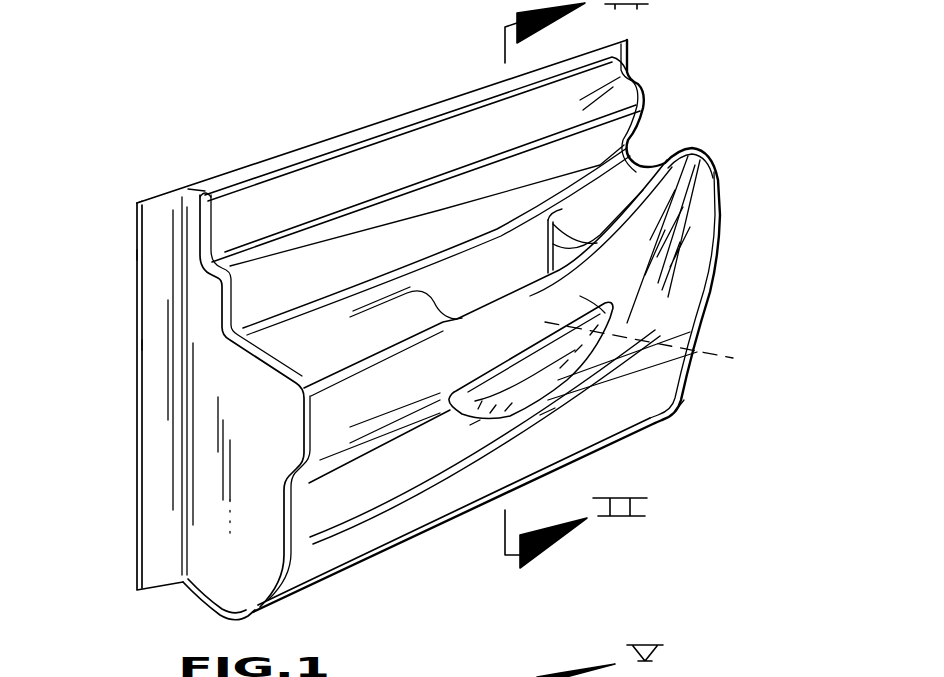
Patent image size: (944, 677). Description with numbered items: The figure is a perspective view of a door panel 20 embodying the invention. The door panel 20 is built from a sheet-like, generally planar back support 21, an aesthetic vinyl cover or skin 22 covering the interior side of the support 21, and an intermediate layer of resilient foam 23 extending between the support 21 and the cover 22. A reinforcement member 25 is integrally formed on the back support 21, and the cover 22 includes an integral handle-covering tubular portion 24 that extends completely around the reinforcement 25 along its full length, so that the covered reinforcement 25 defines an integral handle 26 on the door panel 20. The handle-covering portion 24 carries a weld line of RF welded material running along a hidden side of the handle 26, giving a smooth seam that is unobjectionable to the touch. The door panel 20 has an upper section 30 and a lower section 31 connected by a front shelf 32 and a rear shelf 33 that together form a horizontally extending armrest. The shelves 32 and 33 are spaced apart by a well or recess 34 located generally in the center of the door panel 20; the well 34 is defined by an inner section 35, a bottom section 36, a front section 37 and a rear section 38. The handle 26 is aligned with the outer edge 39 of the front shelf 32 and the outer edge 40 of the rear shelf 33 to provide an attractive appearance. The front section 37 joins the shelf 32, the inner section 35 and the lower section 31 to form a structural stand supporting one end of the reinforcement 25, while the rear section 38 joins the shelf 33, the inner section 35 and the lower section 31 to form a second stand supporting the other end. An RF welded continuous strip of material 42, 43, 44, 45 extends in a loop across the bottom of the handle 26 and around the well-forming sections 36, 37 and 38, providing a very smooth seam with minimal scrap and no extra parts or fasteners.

The door panel 20 is at (698, 62).
The back support 21 is at (137, 252).
The cover 22 is at (243, 462).
The foam 23 is at (142, 346).
The handle-covering tubular portion 24 is at (640, 300).
The reinforcement member 25 is at (659, 350).
The handle 26 is at (520, 352).
The upper section 30 is at (250, 220).
The lower section 31 is at (367, 490).
The front shelf 32 is at (340, 351).
The rear shelf 33 is at (622, 229).
The well 34 is at (510, 273).
The inner section 35 is at (496, 302).
The bottom section 36 is at (633, 420).
The front section 37 is at (475, 422).
The rear section 38 is at (680, 407).
The outer edge of front shelf 39 is at (304, 398).
The outer edge of rear shelf 40 is at (637, 210).
The RF welded strip of material 42 is at (450, 396).
The RF welded strip of material 43 is at (450, 403).
The RF welded strip of material 44 is at (547, 402).
The RF welded strip of material 45 is at (605, 313).